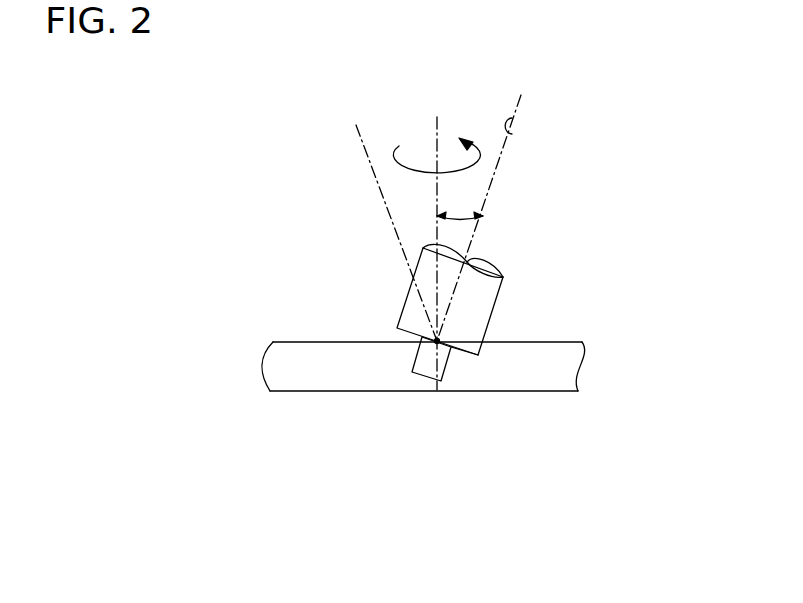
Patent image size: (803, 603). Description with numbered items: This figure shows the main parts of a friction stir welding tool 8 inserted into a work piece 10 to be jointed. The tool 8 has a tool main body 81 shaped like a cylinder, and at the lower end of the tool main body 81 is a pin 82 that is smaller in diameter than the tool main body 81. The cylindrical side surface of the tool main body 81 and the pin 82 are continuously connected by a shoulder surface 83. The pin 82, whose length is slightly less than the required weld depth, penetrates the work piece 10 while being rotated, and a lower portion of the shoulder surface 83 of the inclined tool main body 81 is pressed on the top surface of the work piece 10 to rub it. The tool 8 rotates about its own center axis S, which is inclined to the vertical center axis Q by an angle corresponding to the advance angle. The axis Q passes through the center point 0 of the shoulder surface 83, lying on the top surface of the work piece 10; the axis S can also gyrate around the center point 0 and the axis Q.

The tool 8 is at (494, 350).
The tool main body 81 is at (475, 315).
The pin 82 is at (441, 369).
The shoulder surface 83 is at (467, 353).
The work piece 10 is at (307, 362).
The center point 0 is at (437, 341).
The center axis Q is at (440, 132).
The center axis S is at (443, 204).